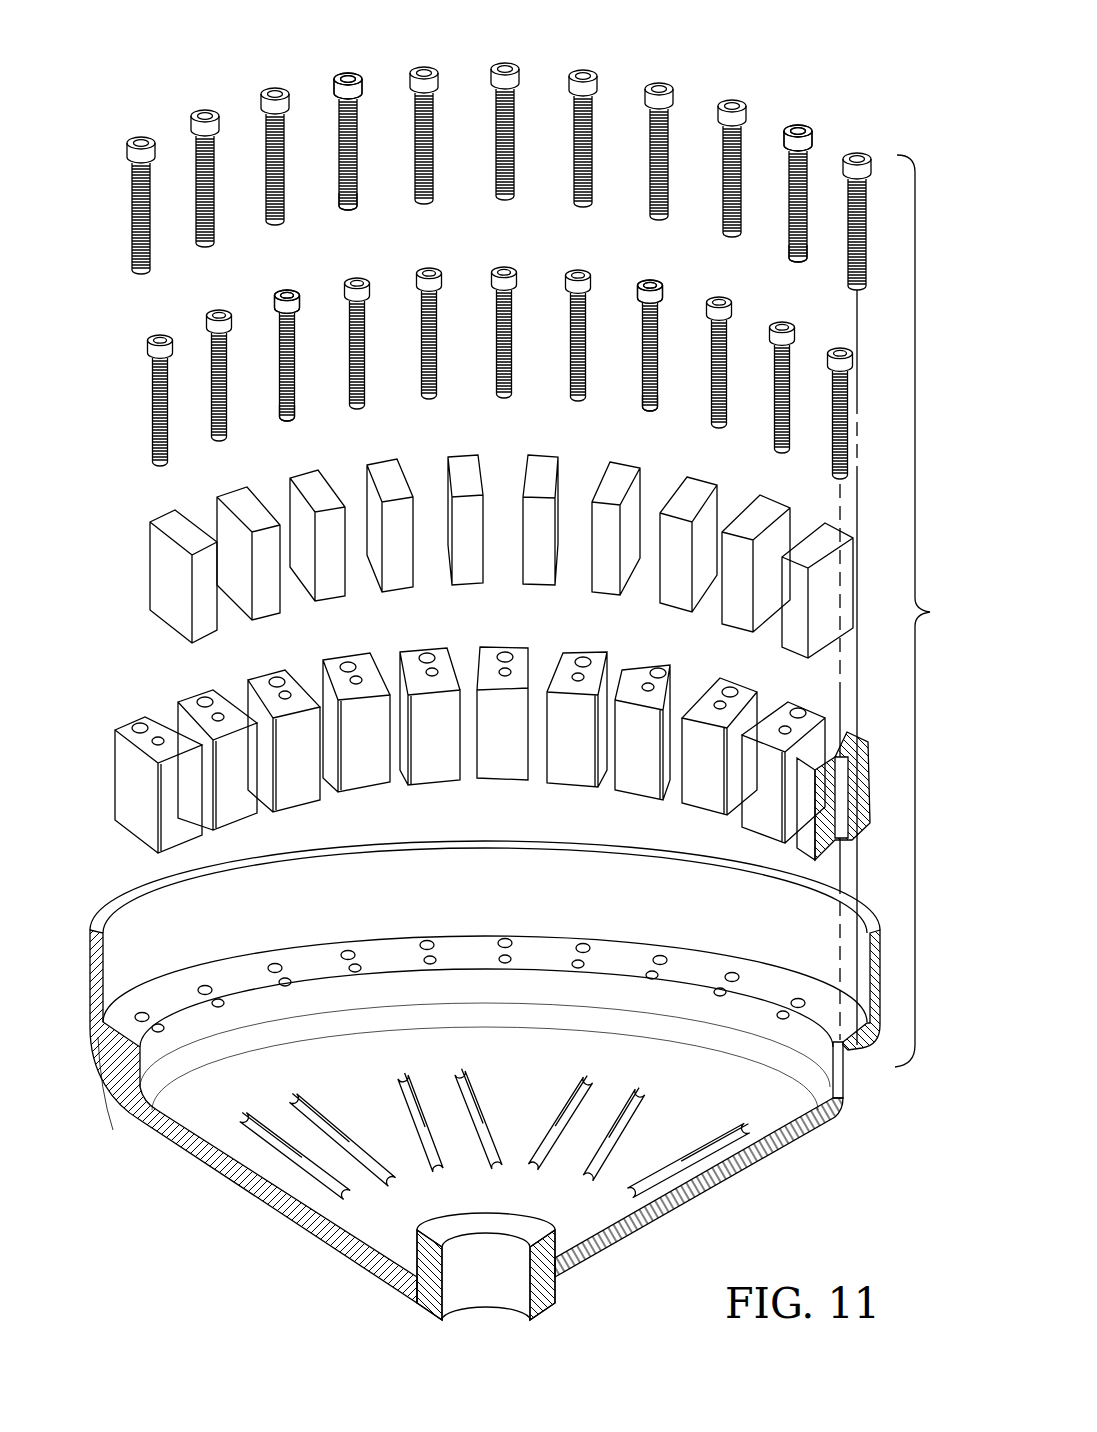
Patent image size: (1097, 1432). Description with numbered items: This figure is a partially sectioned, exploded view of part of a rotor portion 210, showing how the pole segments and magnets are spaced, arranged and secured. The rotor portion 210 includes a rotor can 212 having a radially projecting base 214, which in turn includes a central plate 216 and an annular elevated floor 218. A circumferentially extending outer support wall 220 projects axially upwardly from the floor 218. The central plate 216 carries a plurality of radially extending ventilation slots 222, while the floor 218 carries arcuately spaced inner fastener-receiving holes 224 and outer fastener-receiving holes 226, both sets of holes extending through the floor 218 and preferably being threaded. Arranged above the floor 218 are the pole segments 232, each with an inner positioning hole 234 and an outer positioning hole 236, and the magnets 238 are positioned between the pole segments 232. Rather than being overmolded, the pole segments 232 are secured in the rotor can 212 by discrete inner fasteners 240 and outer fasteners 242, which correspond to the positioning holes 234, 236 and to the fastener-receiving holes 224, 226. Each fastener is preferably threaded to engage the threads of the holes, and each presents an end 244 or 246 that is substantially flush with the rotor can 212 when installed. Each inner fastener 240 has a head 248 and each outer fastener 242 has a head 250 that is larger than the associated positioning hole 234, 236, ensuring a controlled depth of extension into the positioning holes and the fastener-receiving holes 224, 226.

The rotor portion 210 is at (822, 38).
The rotor can 212 is at (826, 82).
The base 214 is at (270, 1198).
The central plate 216 is at (240, 1135).
The floor 218 is at (111, 1101).
The outer support wall 220 is at (148, 938).
The ventilation slots 222 is at (321, 1112).
The inner fastener-receiving holes 224 is at (287, 978).
The outer fastener-receiving holes 226 is at (277, 962).
The pole segments 232 is at (118, 723).
The inner positioning holes 234 is at (160, 732).
The outer positioning holes 236 is at (140, 720).
The magnets 238 is at (147, 553).
The inner fasteners 240 is at (275, 350).
The outer fasteners 242 is at (333, 145).
The end 244 is at (287, 422).
The end 246 is at (348, 212).
The head 248 is at (292, 300).
The head 250 is at (360, 88).